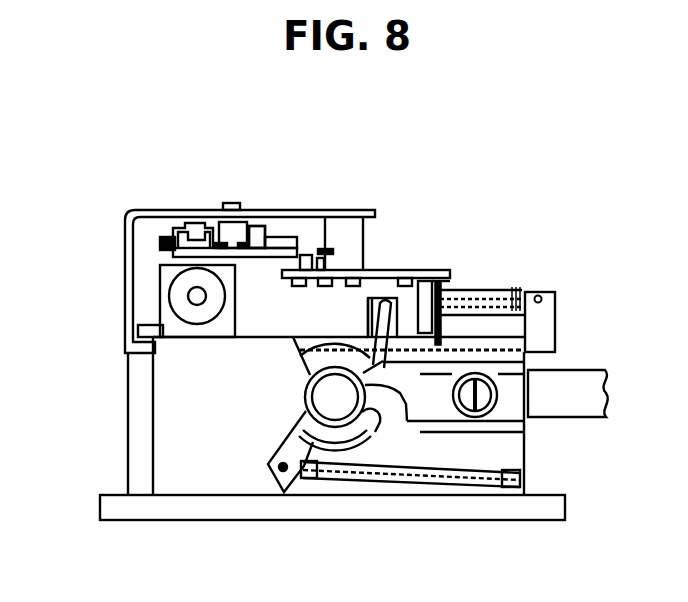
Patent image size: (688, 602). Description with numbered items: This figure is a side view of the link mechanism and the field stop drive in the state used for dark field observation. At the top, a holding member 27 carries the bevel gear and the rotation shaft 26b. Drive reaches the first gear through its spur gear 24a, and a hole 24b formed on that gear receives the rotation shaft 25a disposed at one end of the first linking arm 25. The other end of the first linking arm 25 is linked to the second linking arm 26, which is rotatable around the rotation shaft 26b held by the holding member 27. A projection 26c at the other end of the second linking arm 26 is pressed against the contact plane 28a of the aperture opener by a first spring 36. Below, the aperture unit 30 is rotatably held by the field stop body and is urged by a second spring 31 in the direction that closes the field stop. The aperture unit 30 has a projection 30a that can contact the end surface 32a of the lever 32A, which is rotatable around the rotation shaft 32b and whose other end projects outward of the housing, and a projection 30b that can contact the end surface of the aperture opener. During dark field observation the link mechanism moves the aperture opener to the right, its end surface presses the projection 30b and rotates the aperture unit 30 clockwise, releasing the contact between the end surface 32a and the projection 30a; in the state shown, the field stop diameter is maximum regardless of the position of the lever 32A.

The spur gear 24a is at (160, 243).
The hole 24b is at (190, 222).
The first linking arm 25 is at (252, 222).
The rotation shaft 25a is at (192, 222).
The second linking arm 26 is at (378, 268).
The rotation shaft 26b is at (325, 230).
The projection 26c is at (450, 278).
The holding member 27 is at (140, 210).
The contact plane 28a is at (442, 320).
The aperture unit 30 is at (323, 438).
The projection 30a is at (368, 432).
The projection 30b is at (386, 300).
The second spring 31 is at (510, 485).
The end surface 32a is at (398, 393).
The rotation shaft 32b is at (488, 402).
The lever 32A is at (600, 418).
The first spring 36 is at (513, 290).